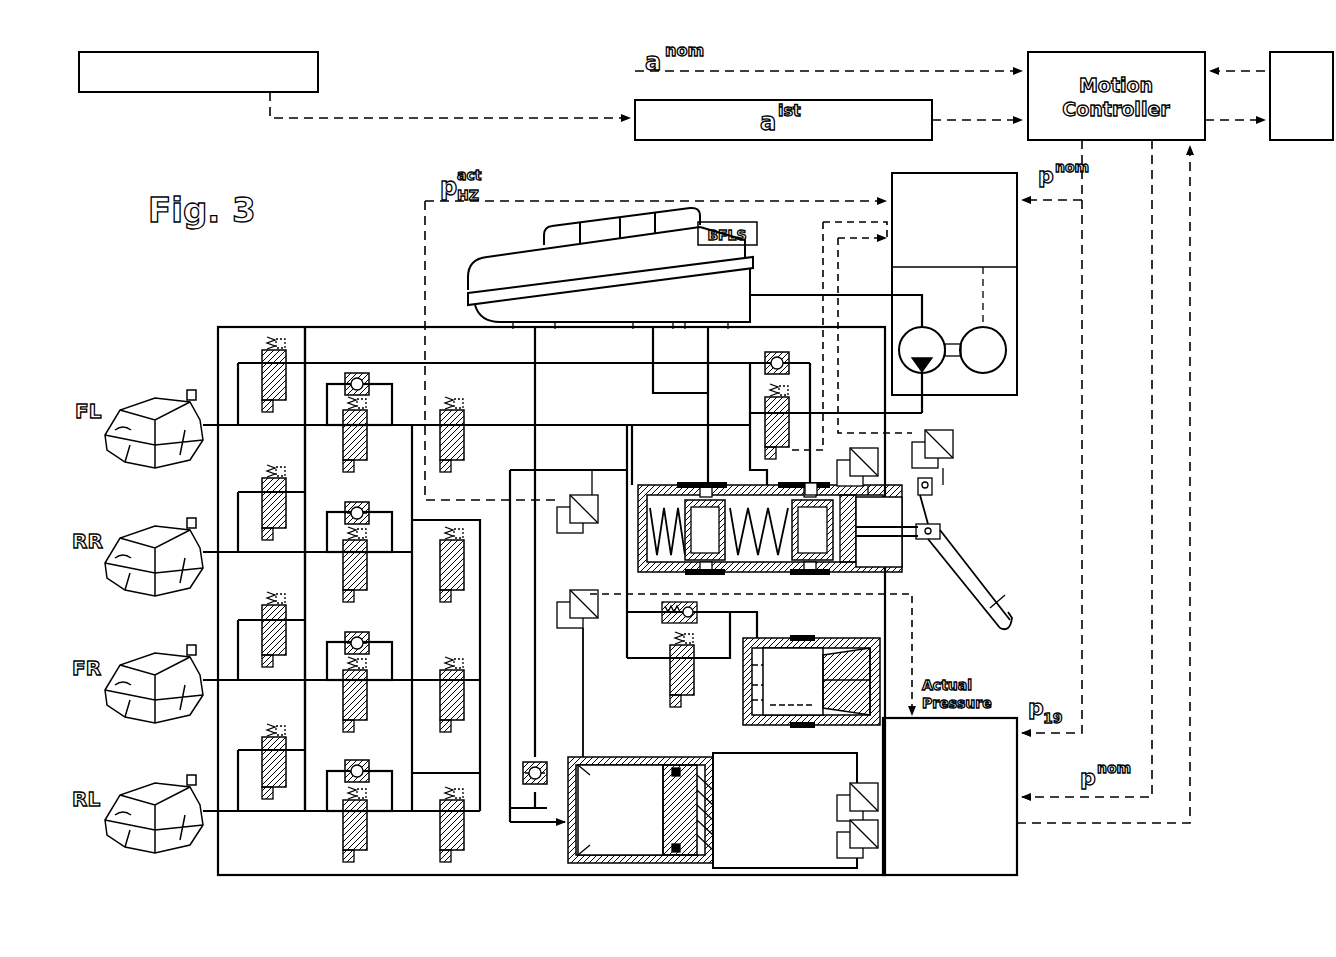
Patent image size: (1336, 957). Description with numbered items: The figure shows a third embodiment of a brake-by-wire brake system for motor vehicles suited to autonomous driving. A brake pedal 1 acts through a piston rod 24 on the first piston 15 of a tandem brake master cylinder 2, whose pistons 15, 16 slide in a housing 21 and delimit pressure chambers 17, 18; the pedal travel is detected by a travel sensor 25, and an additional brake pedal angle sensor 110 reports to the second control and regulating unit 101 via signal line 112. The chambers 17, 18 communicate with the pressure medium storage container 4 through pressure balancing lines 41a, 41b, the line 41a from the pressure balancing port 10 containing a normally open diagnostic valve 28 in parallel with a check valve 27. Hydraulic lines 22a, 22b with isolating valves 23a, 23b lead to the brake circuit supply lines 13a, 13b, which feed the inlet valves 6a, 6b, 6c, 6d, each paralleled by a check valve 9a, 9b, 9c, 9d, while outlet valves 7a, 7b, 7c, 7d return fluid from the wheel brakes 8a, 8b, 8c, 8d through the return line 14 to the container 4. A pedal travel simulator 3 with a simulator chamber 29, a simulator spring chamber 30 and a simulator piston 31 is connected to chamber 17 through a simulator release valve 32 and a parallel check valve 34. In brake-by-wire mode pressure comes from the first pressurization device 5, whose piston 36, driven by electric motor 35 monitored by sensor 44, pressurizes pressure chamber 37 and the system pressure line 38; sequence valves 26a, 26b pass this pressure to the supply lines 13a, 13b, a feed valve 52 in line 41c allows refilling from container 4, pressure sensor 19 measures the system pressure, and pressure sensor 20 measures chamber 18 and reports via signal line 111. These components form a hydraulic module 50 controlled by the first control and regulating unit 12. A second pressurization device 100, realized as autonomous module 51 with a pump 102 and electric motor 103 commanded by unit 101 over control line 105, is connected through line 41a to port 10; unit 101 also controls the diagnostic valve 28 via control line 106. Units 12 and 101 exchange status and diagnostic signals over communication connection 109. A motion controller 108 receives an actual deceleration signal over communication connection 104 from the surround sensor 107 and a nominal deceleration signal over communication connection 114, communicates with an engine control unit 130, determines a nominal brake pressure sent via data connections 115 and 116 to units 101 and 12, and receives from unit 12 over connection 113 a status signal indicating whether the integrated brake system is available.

The brake pedal 1 is at (975, 578).
The brake master cylinder 2 is at (742, 527).
The pedal travel simulator 3 is at (824, 696).
The pressure medium storage container 4 is at (490, 268).
The first electrically controllable pressurization device 5 is at (596, 812).
The inlet valve 6a is at (344, 441).
The inlet valve 6b is at (344, 568).
The inlet valve 6c is at (344, 700).
The inlet valve 6d is at (343, 826).
The outlet valve 7a is at (262, 362).
The outlet valve 7b is at (262, 492).
The outlet valve 7c is at (262, 620).
The outlet valve 7d is at (262, 752).
The wheel brake 8a is at (124, 405).
The wheel brake 8b is at (127, 537).
The wheel brake 8c is at (127, 665).
The wheel brake 8d is at (127, 795).
The check valve 9a is at (360, 372).
The check valve 9b is at (360, 502).
The check valve 9c is at (360, 632).
The check valve 9d is at (360, 760).
The pressure balancing port 10 is at (800, 483).
The first electronic control and regulating unit 12 is at (990, 857).
The brake circuit supply line 13a is at (412, 520).
The brake circuit supply line 13b is at (412, 773).
The return line 14 is at (315, 367).
The first piston 15 is at (848, 545).
The second piston 16 is at (735, 560).
The pressure chamber 17 is at (790, 562).
The pressure chamber 18 is at (655, 560).
The pressure sensor 19 is at (598, 632).
The pressure sensor 20 is at (598, 470).
The housing 21 is at (885, 627).
The hydraulic line 22a is at (587, 420).
The hydraulic line 22b is at (520, 468).
The isolating valve 23a is at (462, 430).
The isolating valve 23b is at (440, 820).
The piston rod 24 is at (912, 535).
The travel sensor 25 is at (895, 480).
The sequence valve 26a is at (440, 560).
The sequence valve 26b is at (440, 695).
The check valve 27 is at (773, 352).
The diagnostic valve 28 is at (767, 413).
The simulator chamber 29 is at (745, 710).
The simulator spring chamber 30 is at (845, 728).
The simulator piston 31 is at (788, 681).
The simulator release valve 32 is at (678, 690).
The check valve 34 is at (667, 622).
The electric motor 35 is at (840, 768).
The piston 36 is at (672, 795).
The pressure chamber 37 is at (590, 830).
The system pressure line 38 is at (592, 748).
The pressure balancing line 41a is at (844, 412).
The pressure balancing line 41b is at (707, 398).
The line 41c is at (532, 346).
The sensor 44 is at (880, 805).
The hydraulic module 50 is at (306, 324).
The autonomous module 51 is at (924, 324).
The feed valve 52 is at (542, 757).
The second electrically controllable pressurization device 100 is at (949, 324).
The second electronic control and regulating unit 101 is at (892, 185).
The pump 102 is at (900, 326).
The electric motor 103 is at (1007, 350).
The communication connection 104 is at (995, 122).
The control line 105 is at (985, 290).
The control line 106 is at (838, 237).
The surround sensor 107 is at (318, 72).
The motion controller 108 is at (1208, 135).
The communication connection 109 is at (1082, 548).
The brake pedal angle sensor 110 is at (955, 458).
The signal line 111 is at (600, 201).
The signal line 112 is at (838, 262).
The connection 113 is at (1190, 752).
The communication connection 114 is at (930, 73).
The data connection 115 is at (1085, 205).
The data connection 116 is at (1152, 583).
The engine control unit 130 is at (1305, 142).